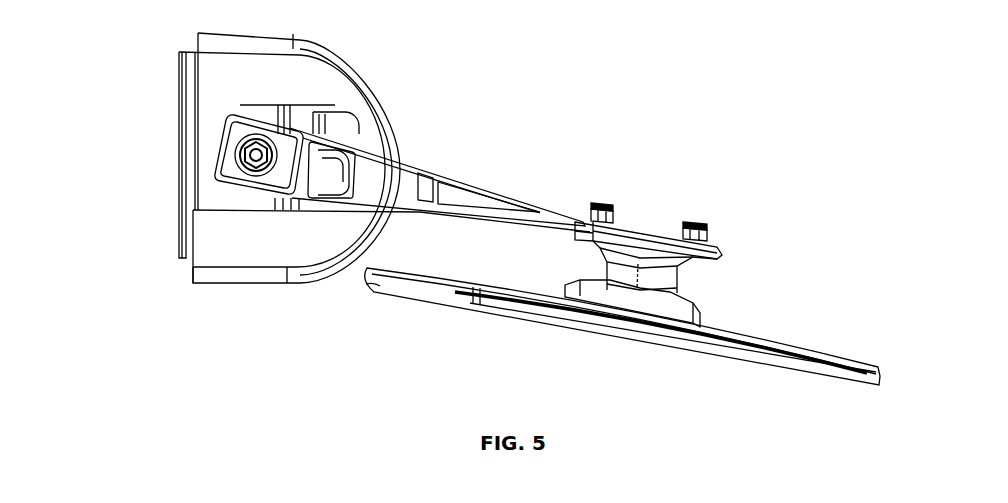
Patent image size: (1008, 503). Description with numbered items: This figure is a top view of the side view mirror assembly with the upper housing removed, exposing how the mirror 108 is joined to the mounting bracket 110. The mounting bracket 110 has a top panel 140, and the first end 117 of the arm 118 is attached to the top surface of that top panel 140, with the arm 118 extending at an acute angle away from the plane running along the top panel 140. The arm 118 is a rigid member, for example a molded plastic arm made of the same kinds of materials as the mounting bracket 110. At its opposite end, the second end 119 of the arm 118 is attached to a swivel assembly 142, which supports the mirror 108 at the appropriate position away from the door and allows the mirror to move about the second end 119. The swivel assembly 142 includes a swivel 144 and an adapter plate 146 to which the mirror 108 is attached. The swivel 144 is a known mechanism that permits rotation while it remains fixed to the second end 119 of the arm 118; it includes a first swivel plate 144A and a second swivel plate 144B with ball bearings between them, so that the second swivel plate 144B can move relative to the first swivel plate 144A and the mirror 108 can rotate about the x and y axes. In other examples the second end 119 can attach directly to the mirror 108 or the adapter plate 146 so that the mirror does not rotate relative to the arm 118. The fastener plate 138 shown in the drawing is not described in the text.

The mirror 108 is at (437, 298).
The mounting bracket 110 is at (195, 197).
The first end 117 is at (214, 143).
The arm 118 is at (507, 195).
The second end 119 is at (630, 223).
The mounting plate 138 is at (222, 118).
The top panel 140 is at (207, 135).
The swivel assembly 142 is at (686, 293).
The swivel 144 is at (595, 265).
The first swivel plate 144A is at (720, 250).
The second swivel plate 144B is at (597, 287).
The adapter plate 146 is at (777, 352).